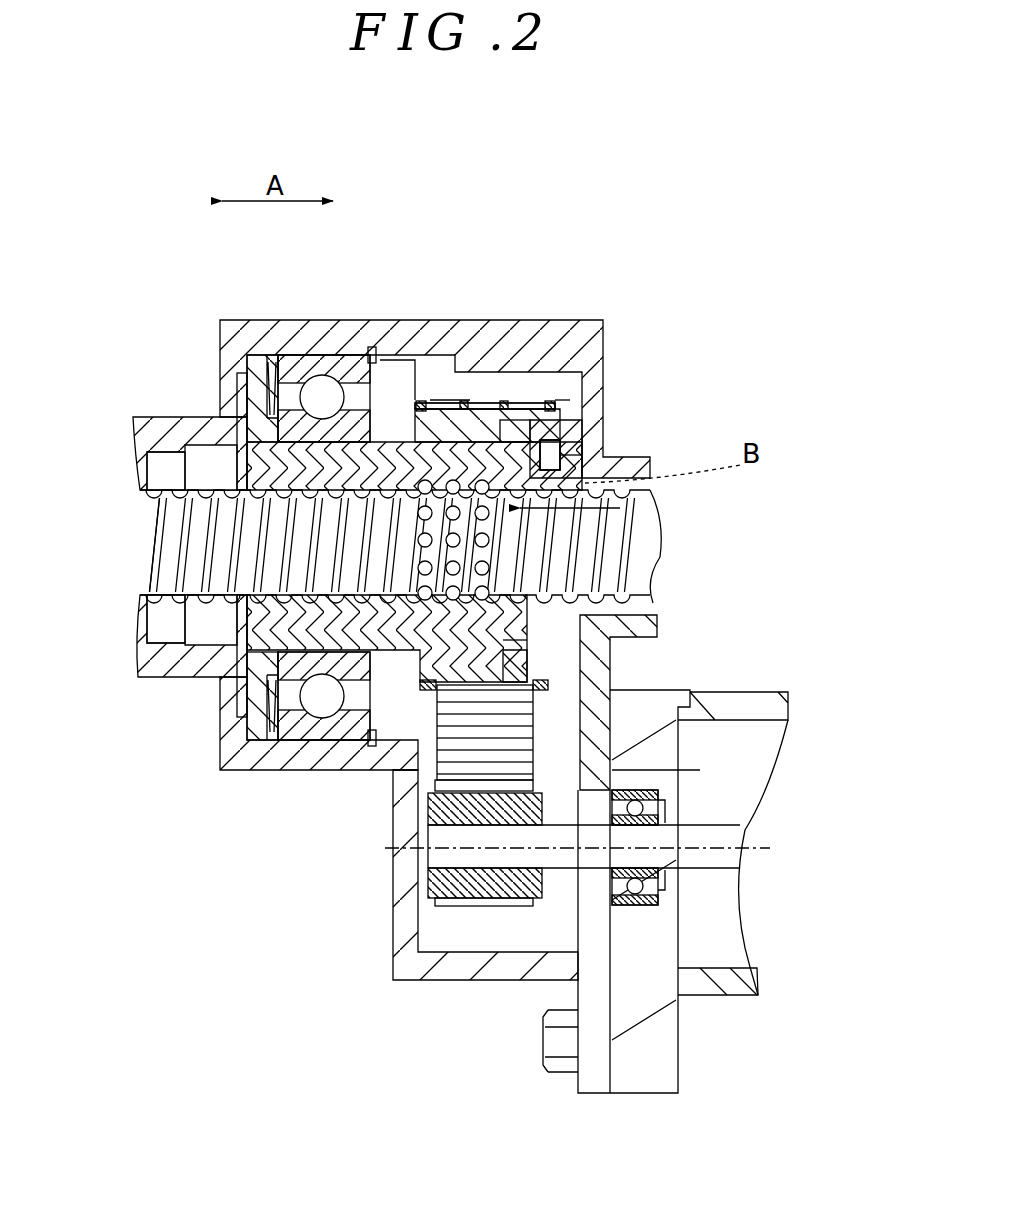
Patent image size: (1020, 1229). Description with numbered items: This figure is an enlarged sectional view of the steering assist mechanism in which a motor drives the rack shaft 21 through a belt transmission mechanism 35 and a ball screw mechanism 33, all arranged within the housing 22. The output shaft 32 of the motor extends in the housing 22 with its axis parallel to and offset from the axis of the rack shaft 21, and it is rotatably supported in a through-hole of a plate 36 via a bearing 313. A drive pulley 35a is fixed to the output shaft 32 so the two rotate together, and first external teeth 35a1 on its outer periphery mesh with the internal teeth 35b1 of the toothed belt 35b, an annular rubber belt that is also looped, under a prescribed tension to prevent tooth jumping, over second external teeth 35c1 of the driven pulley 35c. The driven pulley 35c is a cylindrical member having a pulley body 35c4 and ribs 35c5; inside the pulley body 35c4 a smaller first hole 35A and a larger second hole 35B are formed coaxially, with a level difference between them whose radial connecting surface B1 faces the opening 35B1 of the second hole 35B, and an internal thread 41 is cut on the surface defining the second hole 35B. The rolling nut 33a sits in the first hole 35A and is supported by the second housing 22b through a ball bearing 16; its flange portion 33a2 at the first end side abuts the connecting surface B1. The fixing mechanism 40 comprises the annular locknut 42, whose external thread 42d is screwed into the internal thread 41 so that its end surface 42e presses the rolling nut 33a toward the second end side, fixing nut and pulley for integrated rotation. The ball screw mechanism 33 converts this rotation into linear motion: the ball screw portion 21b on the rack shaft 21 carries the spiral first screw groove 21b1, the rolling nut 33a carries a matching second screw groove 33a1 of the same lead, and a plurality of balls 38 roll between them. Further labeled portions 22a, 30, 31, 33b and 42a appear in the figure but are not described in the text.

The ball bearing 16 is at (321, 385).
The rack shaft 21 is at (530, 540).
The ball screw portion 21b is at (520, 522).
The first screw groove 21b1 is at (155, 545).
The housing 22 is at (757, 307).
The housing second portion 22a is at (700, 326).
The second housing 22b is at (174, 322).
The nut assembly 30 is at (393, 382).
The motor bracket plate 31 is at (740, 1012).
The output shaft 32 is at (430, 853).
The ball screw mechanism 33 is at (600, 505).
The rolling nut 33a is at (240, 470).
The second screw groove 33a1 is at (150, 495).
The flange portion 33a2 is at (720, 722).
The nut second portion 33b is at (250, 523).
The belt transmission mechanism 35 is at (300, 768).
The first hole 35A is at (222, 772).
The second hole 35B is at (555, 657).
The opening 35B1 is at (575, 456).
The drive pulley 35a is at (430, 887).
The first external teeth 35a1 is at (470, 905).
The toothed belt 35b is at (413, 773).
The internal teeth 35b1 is at (700, 770).
The driven pulley 35c is at (505, 402).
The second external teeth 35c1 is at (450, 400).
The pulley body 35c4 is at (485, 406).
The ribs 35c5 is at (415, 405).
The plate 36 is at (700, 937).
The balls 38 is at (493, 572).
The fixing mechanism 40 is at (600, 440).
The internal thread 41 is at (560, 432).
The locknut 42 is at (575, 446).
The elastic member body 42a is at (550, 455).
The external thread 42d is at (560, 640).
The end surface 42e is at (560, 462).
The bearing 313 is at (660, 893).
The connecting surface B1 is at (563, 403).